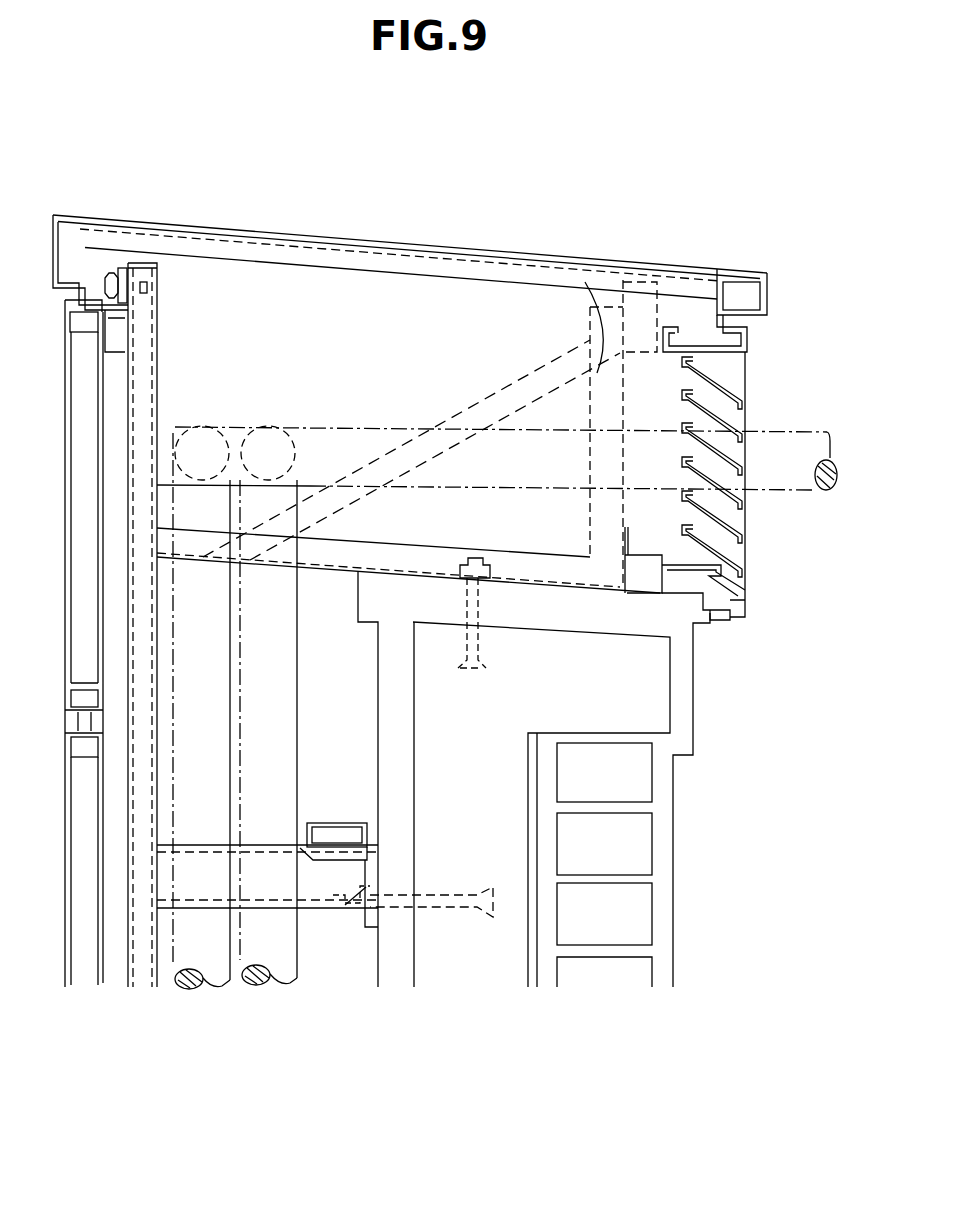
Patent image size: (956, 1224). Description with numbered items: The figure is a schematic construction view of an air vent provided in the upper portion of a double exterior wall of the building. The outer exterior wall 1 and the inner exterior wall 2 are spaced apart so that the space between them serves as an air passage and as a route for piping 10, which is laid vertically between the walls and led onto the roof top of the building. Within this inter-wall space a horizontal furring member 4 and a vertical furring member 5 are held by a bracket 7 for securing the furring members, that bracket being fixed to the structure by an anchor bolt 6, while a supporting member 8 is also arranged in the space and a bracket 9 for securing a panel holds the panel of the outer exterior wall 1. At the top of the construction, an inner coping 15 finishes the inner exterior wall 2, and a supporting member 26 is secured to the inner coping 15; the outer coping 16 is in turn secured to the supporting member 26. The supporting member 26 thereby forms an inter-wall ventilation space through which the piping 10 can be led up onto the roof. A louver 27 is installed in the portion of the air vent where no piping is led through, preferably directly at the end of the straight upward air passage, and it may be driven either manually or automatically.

The outer exterior wall 1 is at (90, 960).
The inner exterior wall 2 is at (378, 950).
The horizontal furring member 4 is at (336, 822).
The vertical furring member 5 is at (143, 960).
The anchor bolt 6 is at (452, 908).
The bracket for securing the furring members 7 is at (358, 912).
The supporting member 8 is at (275, 913).
The bracket for securing a panel 9 is at (75, 323).
The piping 10 is at (349, 437).
The inner coping 15 is at (590, 598).
The outer coping 16 is at (314, 238).
The supporting member 26 is at (586, 305).
The louver 27 is at (742, 422).